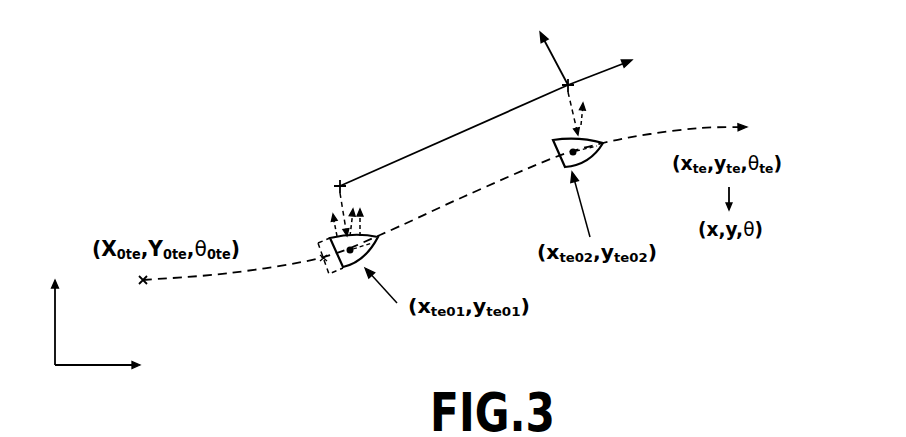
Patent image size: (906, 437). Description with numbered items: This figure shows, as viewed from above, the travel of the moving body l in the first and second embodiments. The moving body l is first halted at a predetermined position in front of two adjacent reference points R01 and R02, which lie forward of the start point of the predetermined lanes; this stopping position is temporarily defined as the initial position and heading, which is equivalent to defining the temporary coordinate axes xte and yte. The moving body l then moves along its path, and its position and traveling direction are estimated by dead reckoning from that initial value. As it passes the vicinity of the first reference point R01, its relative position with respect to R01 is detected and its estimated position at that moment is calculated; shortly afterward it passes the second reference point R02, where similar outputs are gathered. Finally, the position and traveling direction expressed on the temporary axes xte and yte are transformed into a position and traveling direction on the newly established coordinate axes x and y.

The moving body l is at (562, 168).
The first reference point R01 is at (267, 203).
The second reference point R02 is at (490, 96).
The newly established coordinate axis x is at (611, 63).
The newly established coordinate axis y is at (546, 47).
The temporary coordinate axis xte is at (116, 367).
The temporary coordinate axis yte is at (54, 307).